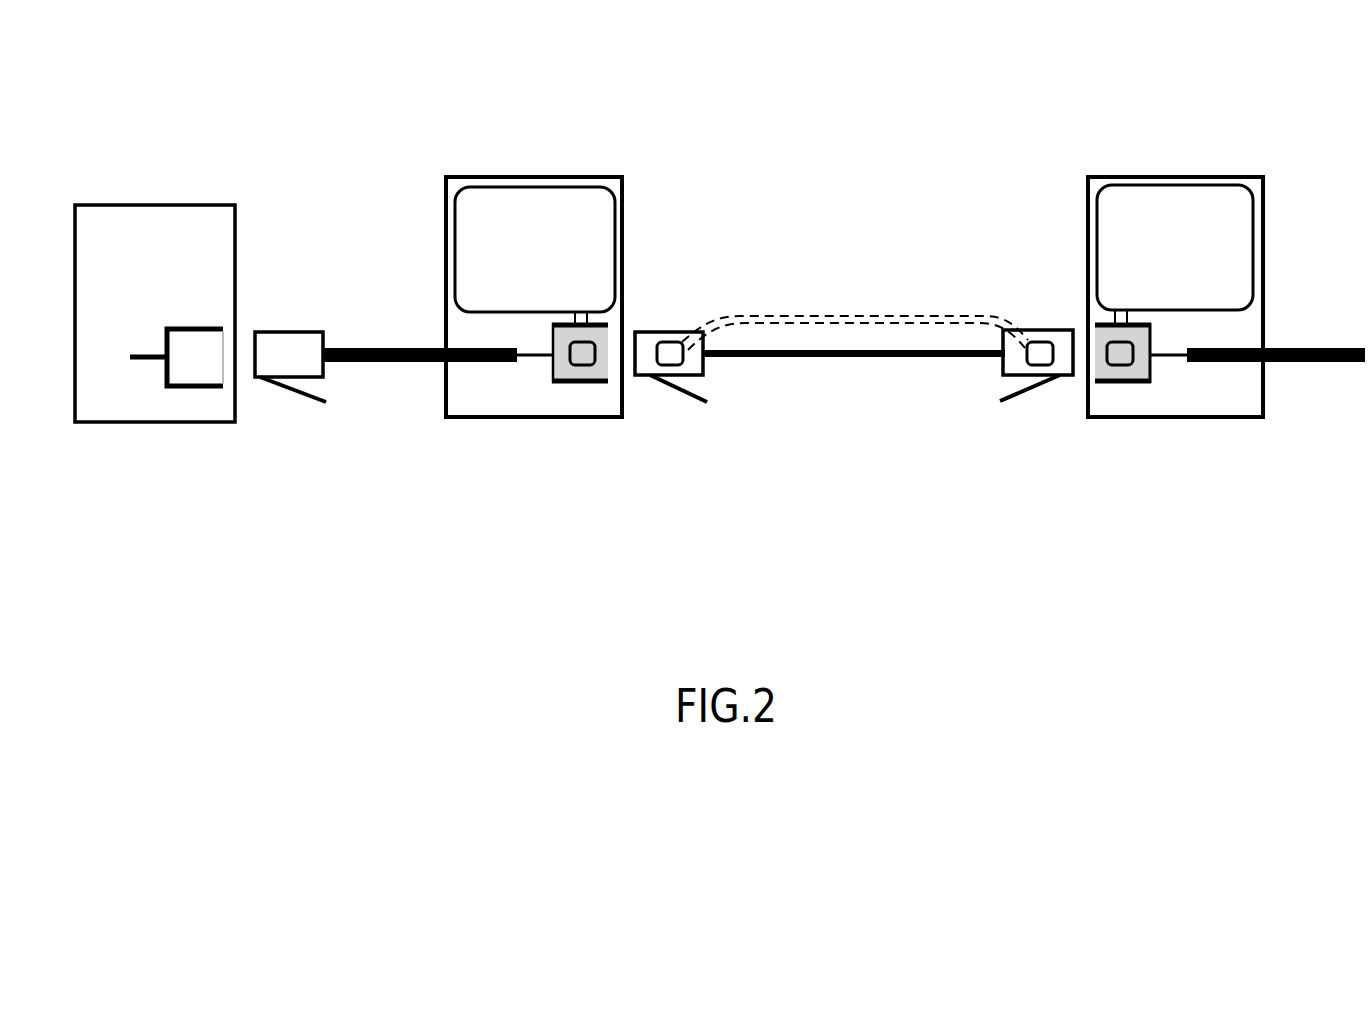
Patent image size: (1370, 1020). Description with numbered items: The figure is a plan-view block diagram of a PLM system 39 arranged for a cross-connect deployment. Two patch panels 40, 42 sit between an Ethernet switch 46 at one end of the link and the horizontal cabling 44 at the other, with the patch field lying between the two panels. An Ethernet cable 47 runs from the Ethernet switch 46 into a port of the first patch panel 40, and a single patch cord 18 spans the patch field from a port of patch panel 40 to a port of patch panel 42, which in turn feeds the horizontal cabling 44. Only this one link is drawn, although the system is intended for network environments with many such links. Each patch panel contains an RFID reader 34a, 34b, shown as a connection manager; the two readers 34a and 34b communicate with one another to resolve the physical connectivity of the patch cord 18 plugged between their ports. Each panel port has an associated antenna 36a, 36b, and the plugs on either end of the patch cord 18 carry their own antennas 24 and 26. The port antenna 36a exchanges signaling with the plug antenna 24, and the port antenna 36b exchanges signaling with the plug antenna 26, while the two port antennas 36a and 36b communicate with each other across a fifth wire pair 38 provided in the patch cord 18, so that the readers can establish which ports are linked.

The patch cord 18 is at (860, 388).
The antenna 24 is at (671, 362).
The antenna 26 is at (1039, 362).
The RFID reader 34a is at (602, 223).
The RFID reader 34b is at (1110, 218).
The antenna 36a is at (582, 362).
The antenna 36b is at (1121, 362).
The fifth wire pair 38 is at (838, 313).
The PLM system 39 is at (820, 115).
The patch panel 40 is at (527, 177).
The patch panel 42 is at (1157, 177).
The horizontal cabling 44 is at (1310, 348).
The Ethernet switch 46 is at (142, 205).
The Ethernet cable 47 is at (293, 313).